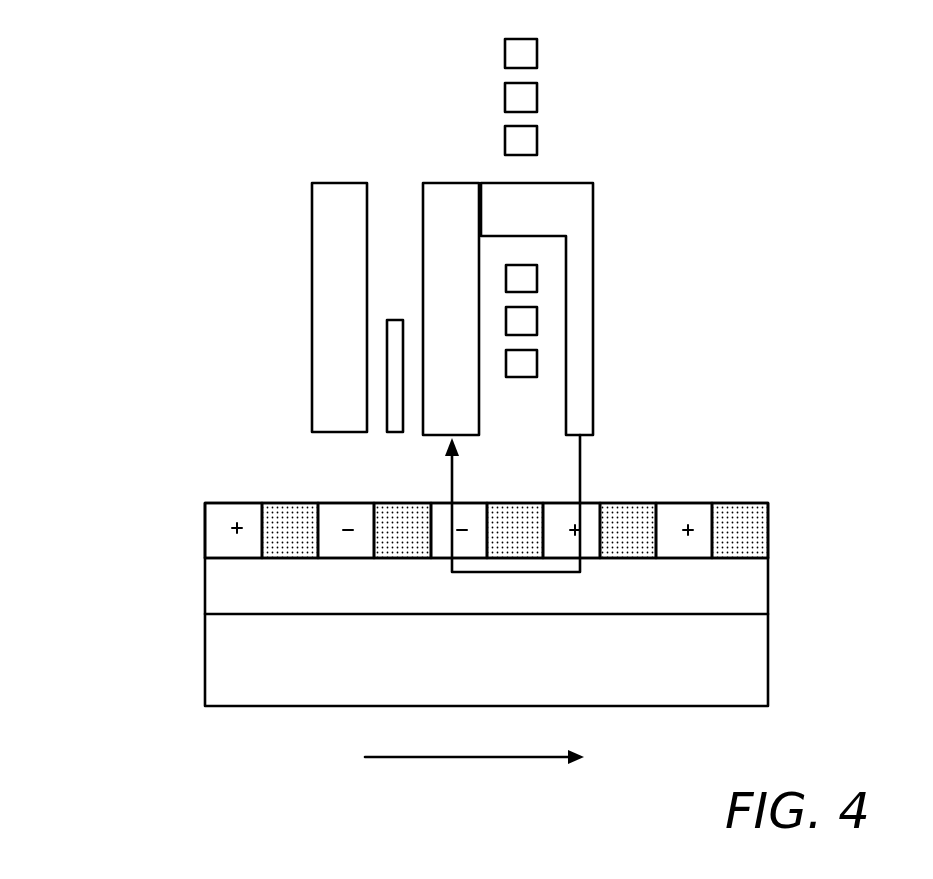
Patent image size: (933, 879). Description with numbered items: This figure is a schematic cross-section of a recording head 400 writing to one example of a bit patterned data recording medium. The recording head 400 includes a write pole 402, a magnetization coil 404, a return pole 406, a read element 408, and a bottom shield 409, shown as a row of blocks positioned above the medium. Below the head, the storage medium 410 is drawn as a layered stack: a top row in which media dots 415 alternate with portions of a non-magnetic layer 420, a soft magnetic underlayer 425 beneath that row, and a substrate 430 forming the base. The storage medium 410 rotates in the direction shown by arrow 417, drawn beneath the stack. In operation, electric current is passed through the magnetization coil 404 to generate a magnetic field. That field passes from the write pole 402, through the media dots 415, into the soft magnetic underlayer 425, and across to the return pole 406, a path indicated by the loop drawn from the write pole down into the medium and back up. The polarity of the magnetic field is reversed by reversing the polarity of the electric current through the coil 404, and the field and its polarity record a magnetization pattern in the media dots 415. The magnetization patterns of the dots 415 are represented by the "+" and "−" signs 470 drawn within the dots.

The recording head 400 is at (662, 131).
The write pole 402 is at (593, 250).
The magnetization coil 404 is at (504, 96).
The return pole 406 is at (433, 204).
The read element 408 is at (393, 397).
The bottom shield 409 is at (325, 262).
The storage medium 410 is at (521, 571).
The media dots 415 is at (215, 540).
The arrow 417 is at (437, 757).
The non-magnetic layer 420 is at (287, 510).
The soft magnetic underlayer 425 is at (760, 583).
The substrate 430 is at (752, 673).
The "+" and "−" signs 470 is at (237, 528).